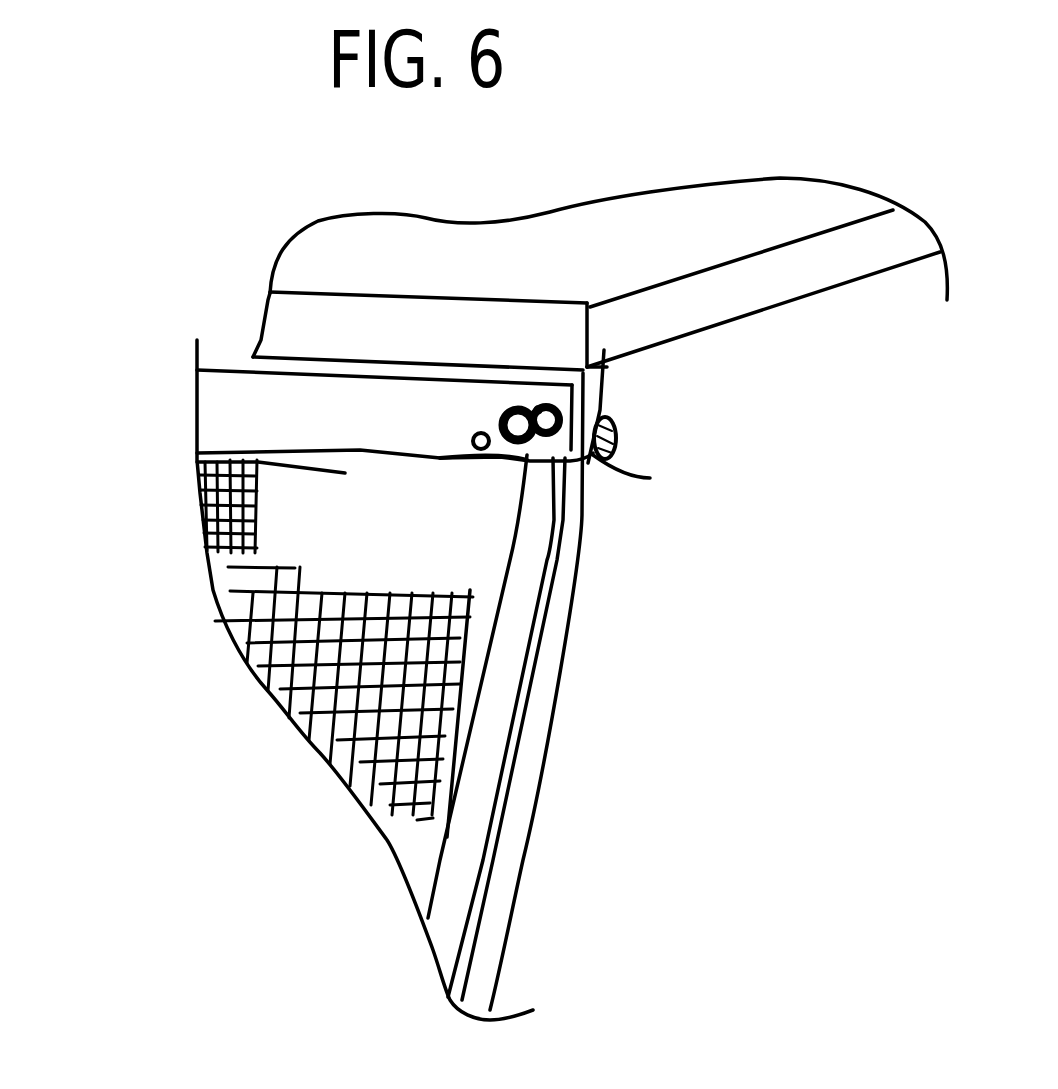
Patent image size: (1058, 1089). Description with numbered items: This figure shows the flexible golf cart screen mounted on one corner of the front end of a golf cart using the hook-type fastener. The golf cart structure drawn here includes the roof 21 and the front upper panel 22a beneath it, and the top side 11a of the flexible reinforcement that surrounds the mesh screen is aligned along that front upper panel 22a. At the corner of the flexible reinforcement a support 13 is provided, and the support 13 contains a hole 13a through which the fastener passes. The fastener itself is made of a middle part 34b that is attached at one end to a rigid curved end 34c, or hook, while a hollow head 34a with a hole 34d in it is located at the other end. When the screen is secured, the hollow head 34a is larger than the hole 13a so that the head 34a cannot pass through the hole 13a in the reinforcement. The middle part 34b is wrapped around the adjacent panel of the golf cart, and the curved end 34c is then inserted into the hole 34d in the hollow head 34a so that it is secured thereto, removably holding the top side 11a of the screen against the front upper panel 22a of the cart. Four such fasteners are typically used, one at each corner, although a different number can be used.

The top side 11a is at (220, 403).
The roof 21 is at (340, 313).
The front upper panel 22a is at (447, 312).
The support 13 is at (590, 405).
The hole 13a is at (538, 410).
The hollow head 34a is at (500, 408).
The middle part 34b is at (650, 478).
The curved end 34c is at (473, 447).
The hole 34d is at (518, 452).